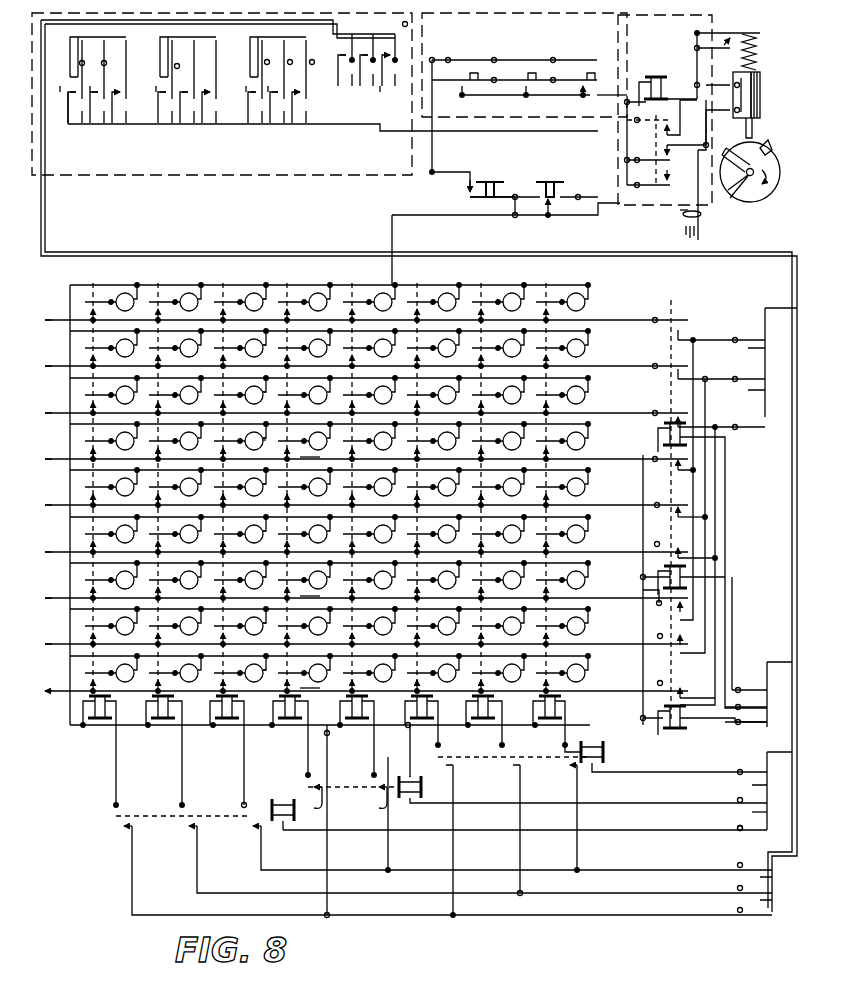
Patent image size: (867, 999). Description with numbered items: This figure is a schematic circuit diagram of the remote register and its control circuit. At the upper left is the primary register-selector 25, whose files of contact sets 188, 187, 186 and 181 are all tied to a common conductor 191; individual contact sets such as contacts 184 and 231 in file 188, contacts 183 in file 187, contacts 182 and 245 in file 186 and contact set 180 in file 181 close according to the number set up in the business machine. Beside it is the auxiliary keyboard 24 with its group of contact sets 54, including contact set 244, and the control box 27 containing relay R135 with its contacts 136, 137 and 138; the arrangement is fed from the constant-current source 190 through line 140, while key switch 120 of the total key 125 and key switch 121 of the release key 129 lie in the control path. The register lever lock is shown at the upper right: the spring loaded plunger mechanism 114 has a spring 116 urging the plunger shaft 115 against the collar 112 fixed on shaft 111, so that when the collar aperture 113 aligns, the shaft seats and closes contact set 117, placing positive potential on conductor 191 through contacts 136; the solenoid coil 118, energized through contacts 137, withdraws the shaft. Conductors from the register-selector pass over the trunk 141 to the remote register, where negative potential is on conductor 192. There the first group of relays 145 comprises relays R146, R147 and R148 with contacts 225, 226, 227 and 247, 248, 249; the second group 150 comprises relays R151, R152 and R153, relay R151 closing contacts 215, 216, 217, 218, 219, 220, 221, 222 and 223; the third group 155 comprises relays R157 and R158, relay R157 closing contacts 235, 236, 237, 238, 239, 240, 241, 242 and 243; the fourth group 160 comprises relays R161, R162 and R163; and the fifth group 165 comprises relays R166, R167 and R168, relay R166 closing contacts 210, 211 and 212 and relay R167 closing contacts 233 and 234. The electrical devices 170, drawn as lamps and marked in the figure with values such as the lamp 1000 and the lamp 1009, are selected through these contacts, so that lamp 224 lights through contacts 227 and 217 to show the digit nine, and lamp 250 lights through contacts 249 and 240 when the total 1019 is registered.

The register-selector 25 is at (170, 153).
The auxiliary keyboard 24 is at (520, 31).
The control box 27 is at (666, 36).
The trunk 141 is at (60, 226).
The file of contact sets 188 is at (97, 72).
The file of contact sets 187 is at (187, 72).
The file of contact sets 186 is at (277, 72).
The file of contact sets 181 is at (367, 52).
The conductor 191 is at (224, 130).
The contacts 184 is at (74, 94).
The contact set 231 is at (92, 84).
The contacts 183 is at (172, 94).
The contacts 182 is at (264, 94).
The contact set 245 is at (284, 95).
The contact set 180 is at (388, 94).
The group of contact sets 54 is at (515, 75).
The contact set 244 is at (445, 78).
The conductor 192 is at (398, 229).
The key switch 120 is at (468, 198).
The key switch 121 is at (555, 200).
The total key 125 is at (482, 180).
The release key 129 is at (548, 180).
The relay R135 is at (645, 85).
The contacts 136 is at (662, 130).
The contacts 137 is at (662, 155).
The contacts 138 is at (688, 176).
The line 140 is at (683, 214).
The source of constant current 190 is at (683, 230).
The contact set 117 is at (722, 32).
The spring 116 is at (756, 52).
The spring loaded plunger mechanism 114 is at (762, 92).
The solenoid coil 118 is at (768, 108).
The plunger shaft 115 is at (756, 135).
The collar 112 is at (766, 202).
The aperture 113 is at (770, 160).
The shaft 111 is at (733, 197).
The electrical devices 170 is at (586, 580).
The contacts 223 is at (82, 309).
The contacts 222 is at (85, 356).
The contacts 221 is at (85, 403).
The contacts 220 is at (85, 449).
The contacts 219 is at (85, 495).
The contacts 218 is at (88, 538).
The lamp 224 is at (115, 580).
The contacts 217 is at (85, 590).
The contacts 216 is at (85, 634).
The contacts 215 is at (85, 681).
The contacts 243 is at (278, 310).
The contacts 242 is at (276, 360).
The contacts 241 is at (276, 405).
The contacts 240 is at (276, 435).
The lamp 250 is at (300, 440).
The number 1019 is at (305, 456).
The contacts 239 is at (276, 480).
The contacts 238 is at (276, 545).
The contacts 237 is at (276, 590).
The lamp 1009 is at (305, 595).
The contacts 236 is at (276, 636).
The contacts 235 is at (276, 682).
The lamp 1000 is at (305, 687).
The first group of relays 145 is at (719, 522).
The relay R148 is at (664, 424).
The contacts 249 is at (672, 448).
The contacts 248 is at (676, 505).
The contacts 247 is at (676, 546).
The relay R147 is at (660, 570).
The contacts 227 is at (672, 606).
The contacts 226 is at (672, 648).
The contacts 225 is at (692, 690).
The relay R146 is at (660, 713).
The second group of relays 150 is at (330, 739).
The relay R151 is at (75, 712).
The relay R152 is at (152, 698).
The relay R153 is at (216, 698).
The relay R157 is at (279, 698).
The relay R158 is at (346, 698).
The relay R161 is at (411, 698).
The relay R162 is at (476, 698).
The relay R163 is at (542, 698).
The third group of relays 155 is at (328, 821).
The fourth group of relays 160 is at (514, 827).
The relay R168 is at (674, 758).
The contacts 233 is at (300, 797).
The contacts 234 is at (376, 800).
The relay R167 is at (404, 800).
The fifth group of relays 165 is at (525, 821).
The relay R166 is at (284, 829).
The contacts 210 is at (120, 830).
The contacts 211 is at (186, 830).
The contacts 212 is at (246, 830).